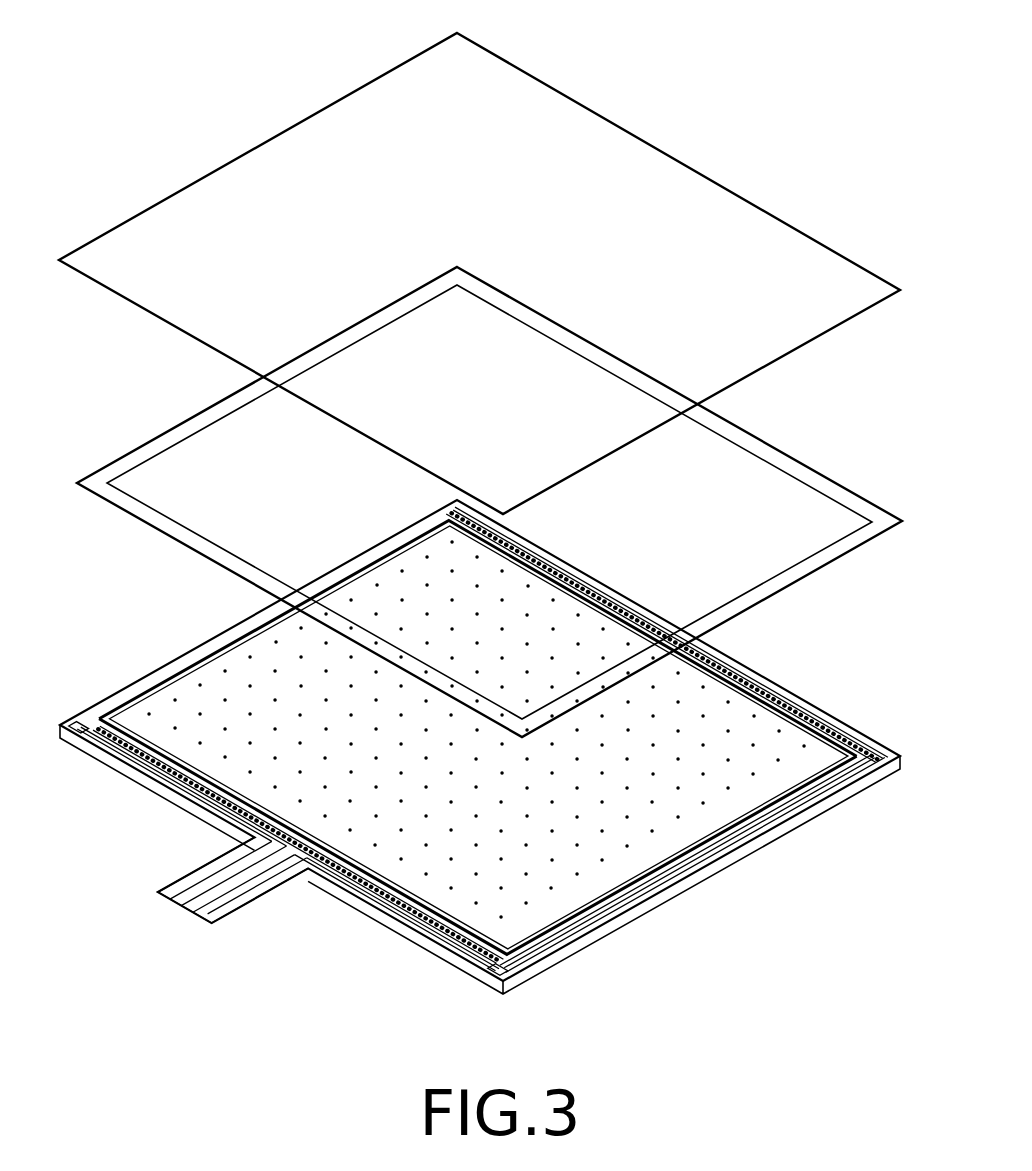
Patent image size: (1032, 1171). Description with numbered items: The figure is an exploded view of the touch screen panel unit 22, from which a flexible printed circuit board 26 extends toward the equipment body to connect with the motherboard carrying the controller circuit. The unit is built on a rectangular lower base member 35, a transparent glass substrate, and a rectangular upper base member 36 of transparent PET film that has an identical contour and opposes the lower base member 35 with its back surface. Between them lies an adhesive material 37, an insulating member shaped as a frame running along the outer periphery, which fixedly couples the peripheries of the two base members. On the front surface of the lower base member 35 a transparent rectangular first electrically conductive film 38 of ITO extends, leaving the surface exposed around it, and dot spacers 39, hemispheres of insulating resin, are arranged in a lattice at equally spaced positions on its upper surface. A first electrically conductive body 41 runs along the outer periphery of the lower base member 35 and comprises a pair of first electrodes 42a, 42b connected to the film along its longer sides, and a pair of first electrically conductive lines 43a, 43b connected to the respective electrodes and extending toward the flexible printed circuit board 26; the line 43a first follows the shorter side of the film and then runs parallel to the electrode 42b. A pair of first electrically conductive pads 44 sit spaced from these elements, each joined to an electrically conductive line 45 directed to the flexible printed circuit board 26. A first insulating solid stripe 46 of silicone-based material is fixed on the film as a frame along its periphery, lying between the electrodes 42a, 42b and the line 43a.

The touch screen panel unit 22 is at (239, 84).
The flexible printed circuit board 26 is at (237, 910).
The lower base member 35 is at (852, 728).
The upper base member 36 is at (849, 262).
The adhesive material 37 is at (850, 493).
The first electrically conductive film 38 is at (205, 681).
The dot spacers 39 is at (622, 880).
The first electrically conductive body 41 is at (822, 704).
The first electrode 42a is at (447, 516).
The first electrode 42b is at (105, 716).
The first electrically conductive line 43a is at (762, 826).
The first electrically conductive line 43b is at (200, 895).
The first electrically conductive pad 44 is at (73, 733).
The electrically conductive line 45 is at (132, 765).
The first insulating solid stripe 46 is at (642, 620).